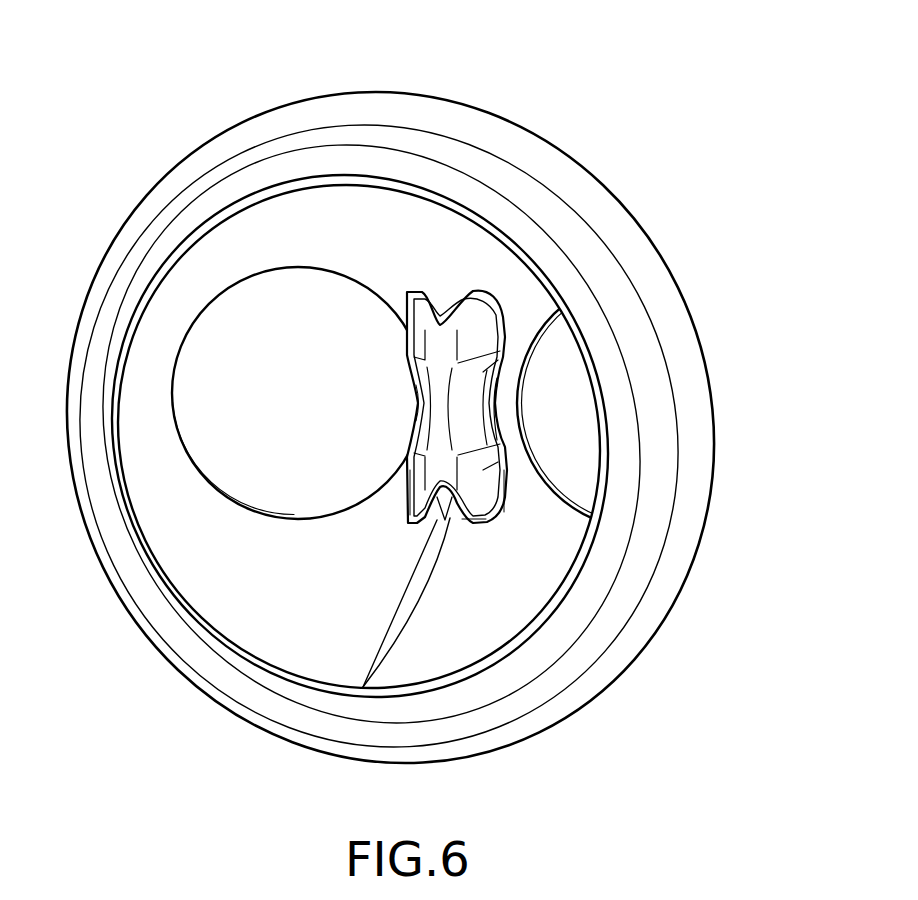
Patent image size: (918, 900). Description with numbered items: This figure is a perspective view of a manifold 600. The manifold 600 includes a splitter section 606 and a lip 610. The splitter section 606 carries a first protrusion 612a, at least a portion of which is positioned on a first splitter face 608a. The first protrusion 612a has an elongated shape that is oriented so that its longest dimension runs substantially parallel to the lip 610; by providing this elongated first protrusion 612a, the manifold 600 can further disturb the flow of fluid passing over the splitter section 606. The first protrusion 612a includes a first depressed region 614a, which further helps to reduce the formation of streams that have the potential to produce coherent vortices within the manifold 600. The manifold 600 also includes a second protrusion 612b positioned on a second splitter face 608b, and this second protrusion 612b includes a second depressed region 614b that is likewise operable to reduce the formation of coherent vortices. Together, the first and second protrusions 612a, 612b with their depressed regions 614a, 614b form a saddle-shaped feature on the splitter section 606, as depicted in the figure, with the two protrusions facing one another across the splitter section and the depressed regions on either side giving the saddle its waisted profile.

The manifold 600 is at (153, 71).
The splitter section 606 is at (417, 327).
The first splitter face 608a is at (417, 532).
The second splitter face 608b is at (455, 537).
The lip 610 is at (438, 298).
The first protrusion 612a is at (412, 485).
The second protrusion 612b is at (473, 488).
The first depressed region 614a is at (418, 407).
The second depressed region 614b is at (478, 405).